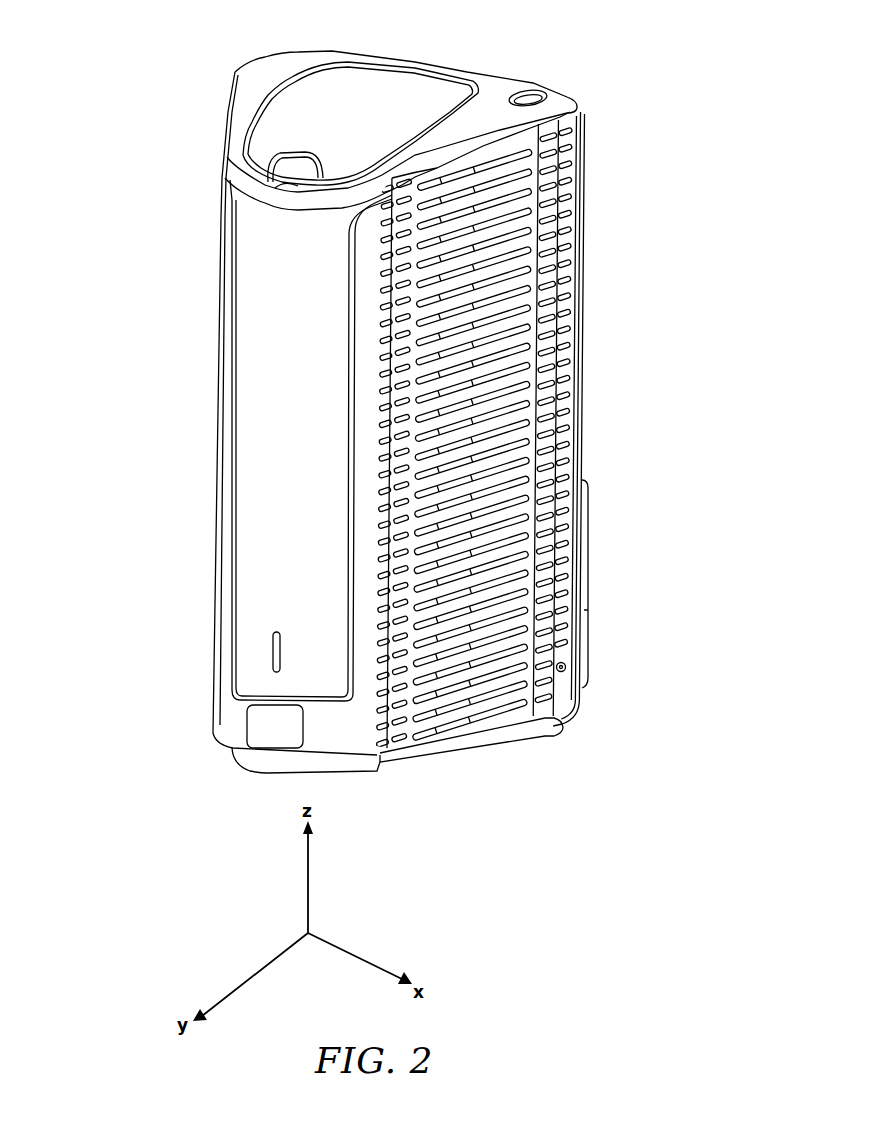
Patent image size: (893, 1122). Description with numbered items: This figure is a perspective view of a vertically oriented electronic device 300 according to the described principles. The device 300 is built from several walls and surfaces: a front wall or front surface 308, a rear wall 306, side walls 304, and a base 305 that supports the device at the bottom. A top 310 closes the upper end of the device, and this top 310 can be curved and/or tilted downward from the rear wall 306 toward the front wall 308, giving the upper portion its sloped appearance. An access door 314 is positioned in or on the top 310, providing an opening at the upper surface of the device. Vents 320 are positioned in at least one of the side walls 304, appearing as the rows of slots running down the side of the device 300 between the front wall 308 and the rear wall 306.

The vertically oriented electronic device 300 is at (624, 96).
The side walls 304 is at (548, 497).
The base 305 is at (427, 762).
The rear wall 306 is at (580, 680).
The front wall 308 is at (258, 350).
The top 310 is at (252, 107).
The access door 314 is at (308, 99).
The vents 320 is at (503, 442).